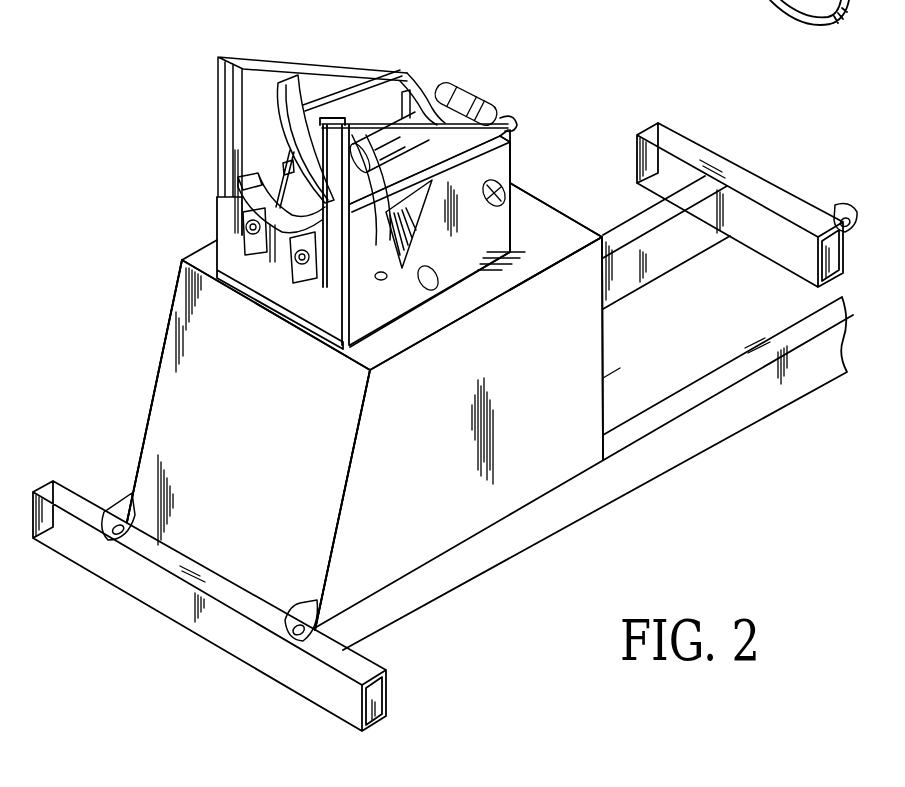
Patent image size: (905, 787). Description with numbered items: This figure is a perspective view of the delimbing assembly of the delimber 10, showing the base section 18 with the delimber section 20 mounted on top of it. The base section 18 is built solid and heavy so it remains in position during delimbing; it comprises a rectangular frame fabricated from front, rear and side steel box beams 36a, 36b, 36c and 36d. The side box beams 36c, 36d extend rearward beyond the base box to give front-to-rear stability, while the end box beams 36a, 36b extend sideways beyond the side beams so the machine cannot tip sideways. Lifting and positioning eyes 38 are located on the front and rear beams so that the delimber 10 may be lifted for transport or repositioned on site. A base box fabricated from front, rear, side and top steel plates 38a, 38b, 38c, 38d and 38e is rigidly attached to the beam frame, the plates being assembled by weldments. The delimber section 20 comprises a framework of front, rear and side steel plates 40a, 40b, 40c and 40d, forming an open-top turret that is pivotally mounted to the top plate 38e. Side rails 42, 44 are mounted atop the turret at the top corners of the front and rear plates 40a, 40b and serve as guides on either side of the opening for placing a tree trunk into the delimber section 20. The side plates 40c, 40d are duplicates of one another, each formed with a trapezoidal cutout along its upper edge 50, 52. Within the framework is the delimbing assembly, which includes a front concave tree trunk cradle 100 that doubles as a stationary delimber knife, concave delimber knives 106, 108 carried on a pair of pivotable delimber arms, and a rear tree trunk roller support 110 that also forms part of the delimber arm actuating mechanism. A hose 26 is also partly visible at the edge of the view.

The delimber 10 is at (153, 242).
The base section 18 is at (497, 588).
The delimber section 20 is at (519, 133).
The hose 26 is at (746, 12).
The front box beam 36a is at (218, 648).
The rear box beam 36b is at (770, 183).
The side box beam 36c is at (733, 430).
The side box beam 36d is at (673, 267).
The lifting and positioning eyes 38 is at (120, 493).
The front plate 38a is at (278, 464).
The rear plate 38b is at (603, 378).
The side plate 38c is at (555, 354).
The side plate 38d is at (163, 337).
The top plate 38e is at (568, 239).
The front plate 40a is at (293, 300).
The rear plate 40b is at (512, 167).
The side plate 40c is at (461, 246).
The side plate 40d is at (360, 90).
The side rail 42 is at (244, 58).
The side rail 44 is at (509, 130).
The trapezoidal cutout 50 is at (262, 172).
The trapezoidal cutout 52 is at (386, 272).
The front concave tree trunk cradle 100 is at (275, 232).
The concave delimber knife 106 is at (303, 76).
The concave delimber knife 108 is at (352, 142).
The rear tree trunk roller support 110 is at (465, 88).